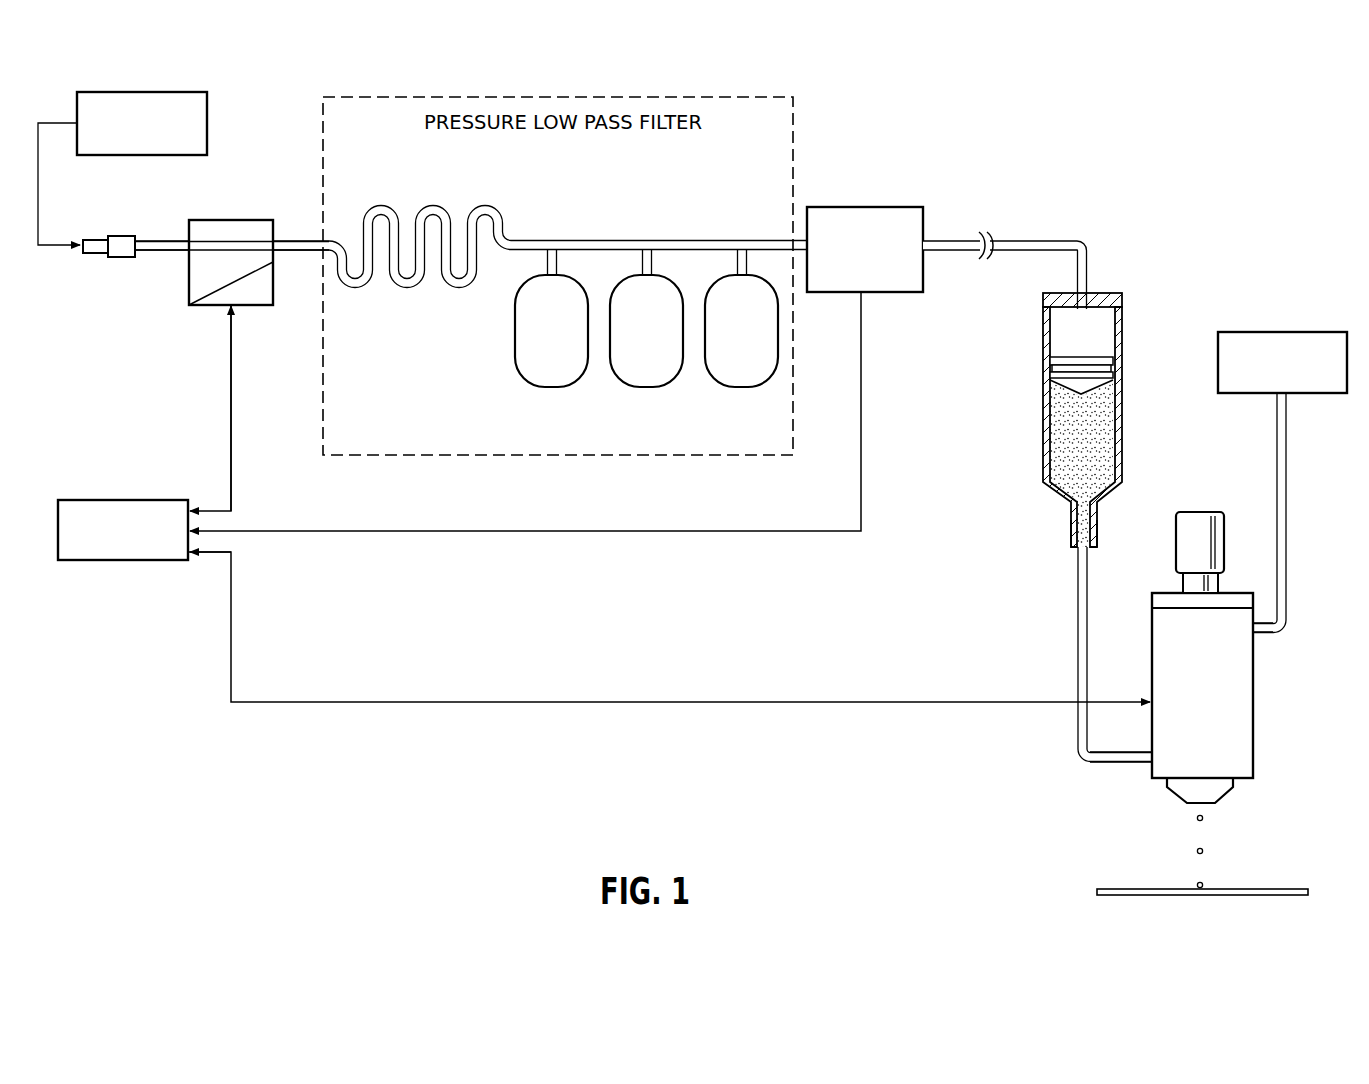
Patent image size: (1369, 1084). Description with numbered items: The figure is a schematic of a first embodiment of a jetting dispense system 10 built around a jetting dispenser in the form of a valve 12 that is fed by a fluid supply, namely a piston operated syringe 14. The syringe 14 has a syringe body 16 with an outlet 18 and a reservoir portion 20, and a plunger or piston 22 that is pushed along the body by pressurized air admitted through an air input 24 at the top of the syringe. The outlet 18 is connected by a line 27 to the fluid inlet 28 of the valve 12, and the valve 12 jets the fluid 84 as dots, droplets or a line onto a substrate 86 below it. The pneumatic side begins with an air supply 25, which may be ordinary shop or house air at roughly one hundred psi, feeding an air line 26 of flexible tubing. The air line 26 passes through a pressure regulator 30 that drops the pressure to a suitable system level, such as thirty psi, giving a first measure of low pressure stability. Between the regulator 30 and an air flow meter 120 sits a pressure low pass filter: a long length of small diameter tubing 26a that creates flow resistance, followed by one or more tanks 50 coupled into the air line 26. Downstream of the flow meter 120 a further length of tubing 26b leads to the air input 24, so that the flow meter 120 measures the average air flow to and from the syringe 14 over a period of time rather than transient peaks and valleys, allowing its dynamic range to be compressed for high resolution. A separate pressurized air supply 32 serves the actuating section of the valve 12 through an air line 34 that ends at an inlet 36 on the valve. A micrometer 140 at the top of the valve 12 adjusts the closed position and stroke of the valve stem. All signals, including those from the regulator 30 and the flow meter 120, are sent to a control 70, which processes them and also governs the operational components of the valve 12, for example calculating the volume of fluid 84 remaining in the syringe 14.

The jetting dispense system 10 is at (1174, 129).
The valve 12 is at (1213, 727).
The piston operated syringe 14 is at (1073, 420).
The syringe body 16 is at (1122, 441).
The outlet 18 is at (1070, 527).
The reservoir portion 20 is at (1122, 386).
The piston 22 is at (1071, 368).
The air input 24 is at (1086, 309).
The air supply 25 is at (207, 113).
The air line 26 is at (160, 252).
The small diameter tubing 26a is at (410, 290).
The tubing 26b is at (1058, 241).
The line 27 is at (1078, 641).
The fluid inlet 28 is at (1145, 763).
The pressure regulator 30 is at (255, 306).
The pressurized air supply 32 is at (1283, 332).
The air line 34 is at (1278, 452).
The inlet 36 is at (1256, 635).
The tanks 50 is at (548, 388).
The control 70 is at (130, 560).
The fluid 84 is at (1065, 437).
The substrate 86 is at (1280, 890).
The air flow meter 120 is at (874, 206).
The valve micrometer 140 is at (1193, 512).